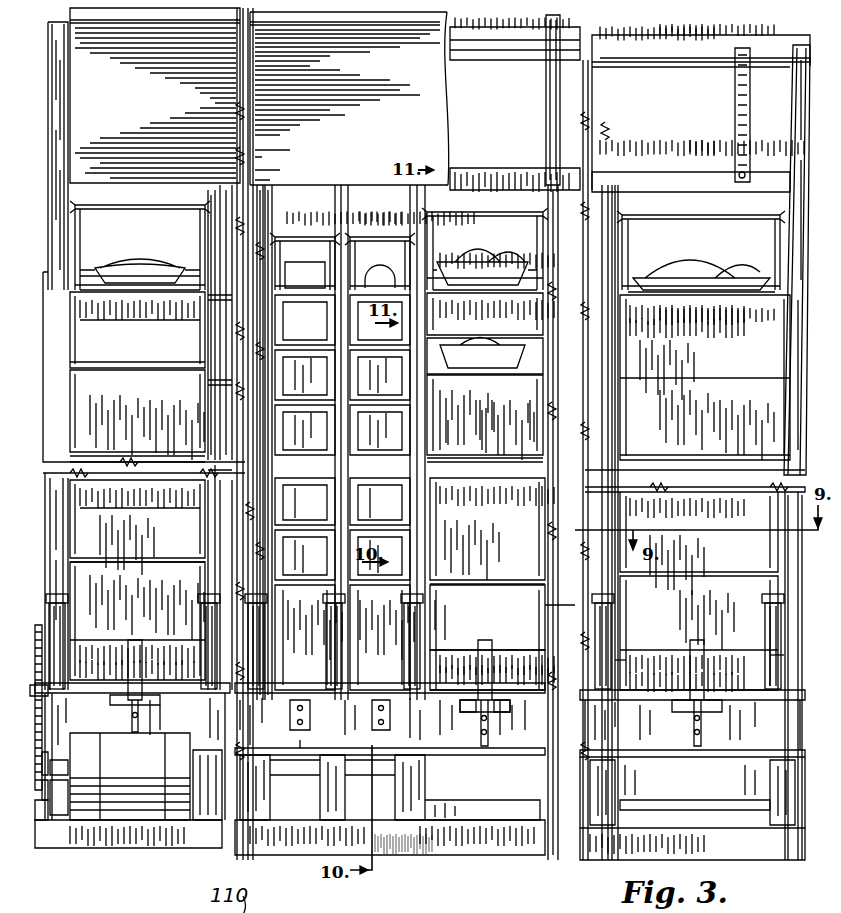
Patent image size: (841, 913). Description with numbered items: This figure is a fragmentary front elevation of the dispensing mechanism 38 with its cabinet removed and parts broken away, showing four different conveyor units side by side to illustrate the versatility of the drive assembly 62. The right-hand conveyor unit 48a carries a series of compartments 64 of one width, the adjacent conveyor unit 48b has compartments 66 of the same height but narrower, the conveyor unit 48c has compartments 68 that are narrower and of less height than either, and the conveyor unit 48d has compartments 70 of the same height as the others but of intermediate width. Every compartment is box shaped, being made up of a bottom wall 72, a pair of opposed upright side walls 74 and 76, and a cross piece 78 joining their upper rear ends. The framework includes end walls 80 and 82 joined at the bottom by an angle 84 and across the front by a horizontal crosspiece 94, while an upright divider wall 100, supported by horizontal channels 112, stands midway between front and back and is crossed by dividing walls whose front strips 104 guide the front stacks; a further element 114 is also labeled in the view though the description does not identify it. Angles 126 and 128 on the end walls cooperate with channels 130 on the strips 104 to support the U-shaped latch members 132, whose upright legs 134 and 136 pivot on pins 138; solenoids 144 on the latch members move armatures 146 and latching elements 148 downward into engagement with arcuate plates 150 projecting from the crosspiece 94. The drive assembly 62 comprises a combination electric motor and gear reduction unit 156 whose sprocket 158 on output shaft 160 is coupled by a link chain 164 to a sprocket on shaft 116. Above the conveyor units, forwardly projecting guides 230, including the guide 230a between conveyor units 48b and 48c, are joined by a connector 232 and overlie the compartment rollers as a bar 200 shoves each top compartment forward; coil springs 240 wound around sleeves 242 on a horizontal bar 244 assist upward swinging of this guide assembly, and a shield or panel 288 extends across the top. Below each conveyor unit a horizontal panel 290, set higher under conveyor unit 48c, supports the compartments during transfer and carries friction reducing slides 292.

The mechanism 38 is at (469, 852).
The right-hand conveyor unit 48a is at (680, 198).
The conveyor unit 48b is at (453, 198).
The conveyor unit 48c is at (358, 188).
The conveyor unit 48d is at (113, 190).
The drive assembly 62 is at (30, 752).
The compartments 64 is at (712, 210).
The compartments 66 is at (478, 210).
The compartments 68 is at (302, 232).
The compartments 70 is at (160, 204).
The bottom wall 72 is at (472, 455).
The side wall 74 is at (431, 426).
The side wall 76 is at (532, 430).
The cross piece 78 is at (474, 380).
The end wall 80 is at (47, 423).
The end wall 82 is at (805, 272).
The angle 84 is at (778, 856).
The horizontal crosspiece 94 is at (668, 742).
The upright divider wall 100 is at (312, 530).
The front strip 104 is at (502, 617).
The channels 112 is at (122, 503).
The door frame 114 is at (140, 312).
The shaft 116 is at (38, 688).
The angle 126 is at (60, 656).
The angle 128 is at (774, 700).
The channels 130 is at (612, 622).
The latch member 132 is at (667, 684).
The leg 134 is at (616, 666).
The leg 136 is at (776, 656).
The pivot pins 138 is at (622, 634).
The solenoid 144 is at (490, 644).
The armature 146 is at (462, 706).
The latching element 148 is at (496, 708).
The arcuate plate 150 is at (482, 722).
The combination electric motor and gear reduction unit 156 is at (145, 818).
The sprocket 158 is at (35, 798).
The output shaft 160 is at (66, 770).
The link chain 164 is at (35, 640).
The bar 200 is at (97, 268).
The guides 230 is at (622, 242).
The guide 230a is at (278, 195).
The connector 232 is at (758, 182).
The coil springs 240 is at (750, 98).
The sleeves 242 is at (730, 50).
The horizontal bar 244 is at (680, 62).
The shield or panel 288 is at (432, 42).
The horizontal panel 290 is at (720, 796).
The slides 292 is at (292, 758).